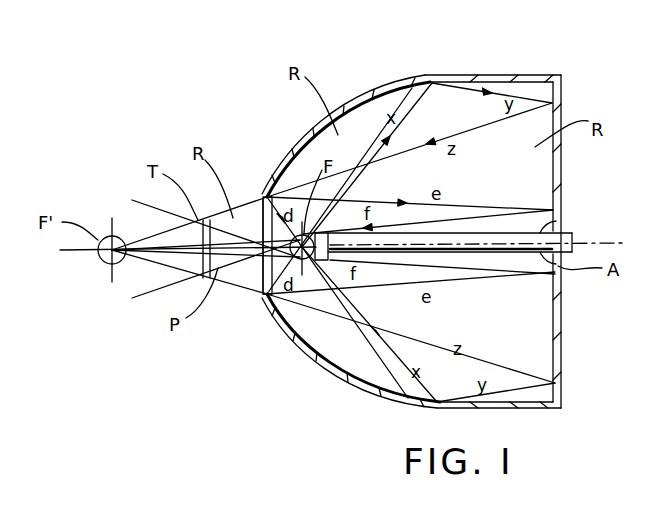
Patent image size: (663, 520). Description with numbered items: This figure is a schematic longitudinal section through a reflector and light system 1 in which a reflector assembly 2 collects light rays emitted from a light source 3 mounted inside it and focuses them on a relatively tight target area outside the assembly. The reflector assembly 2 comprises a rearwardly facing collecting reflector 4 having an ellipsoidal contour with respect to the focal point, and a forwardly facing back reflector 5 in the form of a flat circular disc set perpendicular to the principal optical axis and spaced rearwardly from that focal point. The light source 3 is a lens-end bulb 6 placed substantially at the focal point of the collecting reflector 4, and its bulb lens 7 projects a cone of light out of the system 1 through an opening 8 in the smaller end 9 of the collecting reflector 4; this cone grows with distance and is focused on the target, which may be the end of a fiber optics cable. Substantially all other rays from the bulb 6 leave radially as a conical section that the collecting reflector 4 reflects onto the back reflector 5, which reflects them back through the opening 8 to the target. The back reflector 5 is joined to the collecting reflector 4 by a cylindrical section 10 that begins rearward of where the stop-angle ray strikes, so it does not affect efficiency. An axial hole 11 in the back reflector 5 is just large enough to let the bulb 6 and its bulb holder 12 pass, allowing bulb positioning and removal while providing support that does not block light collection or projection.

The reflector and light system 1 is at (472, 45).
The reflector assembly 2 is at (316, 127).
The light source 3 is at (311, 285).
The collecting reflector 4 is at (358, 108).
The back reflector 5 is at (560, 318).
The lens-end bulb 6 is at (328, 261).
The bulb lens 7 is at (262, 224).
The opening 8 is at (264, 294).
The smaller end 9 is at (267, 192).
The cylindrical section 10 is at (520, 74).
The axial hole 11 is at (560, 221).
The bulb holder 12 is at (497, 236).